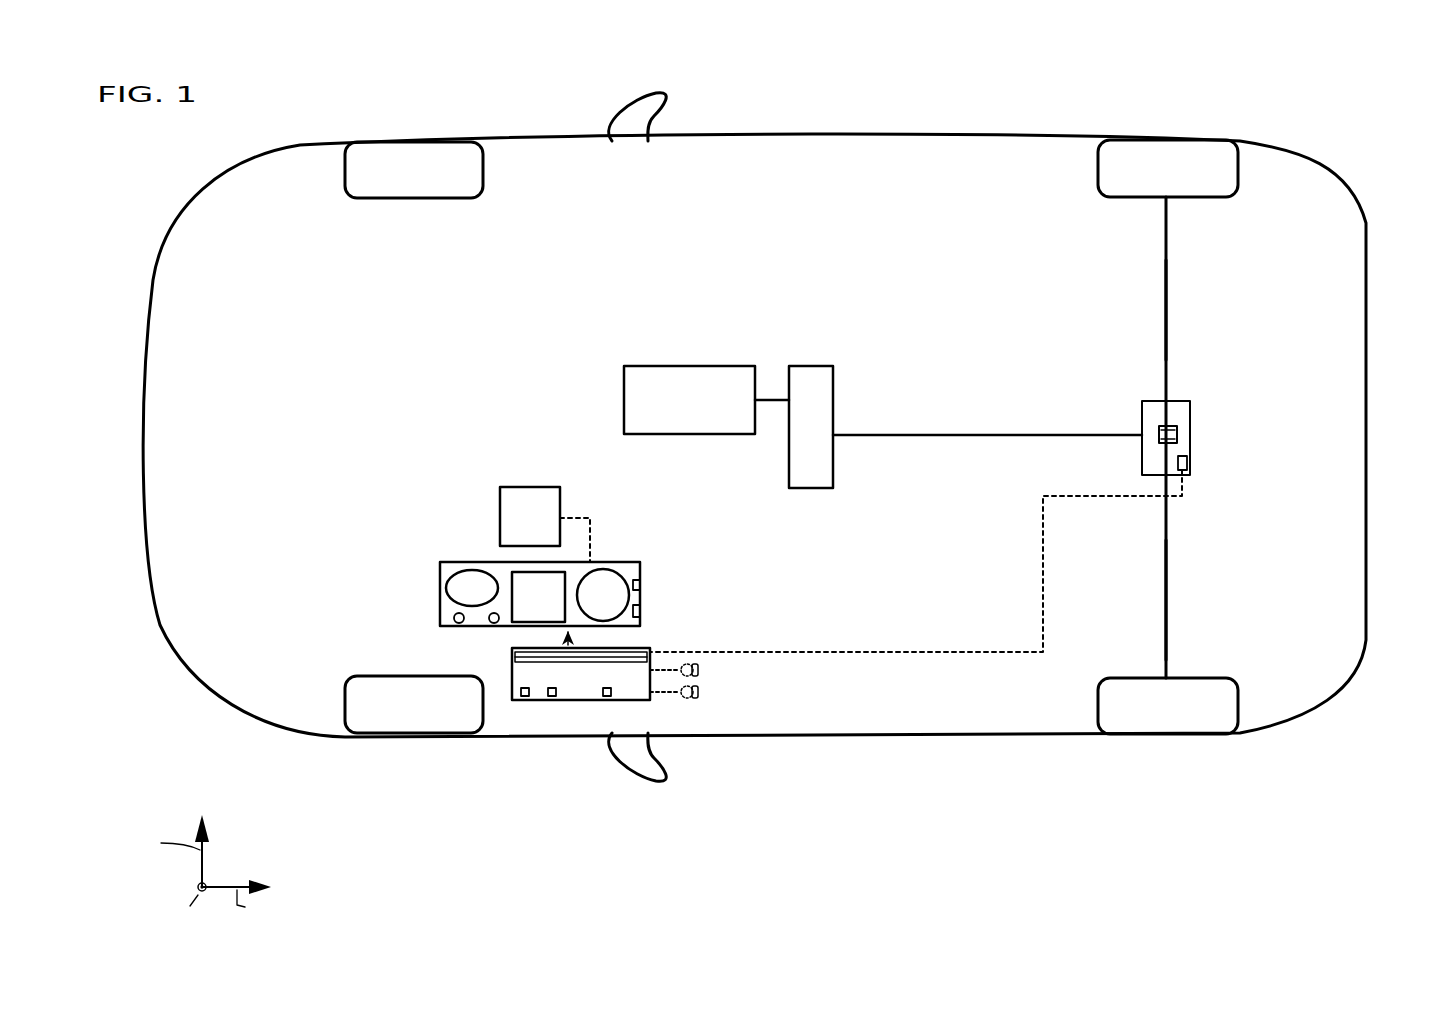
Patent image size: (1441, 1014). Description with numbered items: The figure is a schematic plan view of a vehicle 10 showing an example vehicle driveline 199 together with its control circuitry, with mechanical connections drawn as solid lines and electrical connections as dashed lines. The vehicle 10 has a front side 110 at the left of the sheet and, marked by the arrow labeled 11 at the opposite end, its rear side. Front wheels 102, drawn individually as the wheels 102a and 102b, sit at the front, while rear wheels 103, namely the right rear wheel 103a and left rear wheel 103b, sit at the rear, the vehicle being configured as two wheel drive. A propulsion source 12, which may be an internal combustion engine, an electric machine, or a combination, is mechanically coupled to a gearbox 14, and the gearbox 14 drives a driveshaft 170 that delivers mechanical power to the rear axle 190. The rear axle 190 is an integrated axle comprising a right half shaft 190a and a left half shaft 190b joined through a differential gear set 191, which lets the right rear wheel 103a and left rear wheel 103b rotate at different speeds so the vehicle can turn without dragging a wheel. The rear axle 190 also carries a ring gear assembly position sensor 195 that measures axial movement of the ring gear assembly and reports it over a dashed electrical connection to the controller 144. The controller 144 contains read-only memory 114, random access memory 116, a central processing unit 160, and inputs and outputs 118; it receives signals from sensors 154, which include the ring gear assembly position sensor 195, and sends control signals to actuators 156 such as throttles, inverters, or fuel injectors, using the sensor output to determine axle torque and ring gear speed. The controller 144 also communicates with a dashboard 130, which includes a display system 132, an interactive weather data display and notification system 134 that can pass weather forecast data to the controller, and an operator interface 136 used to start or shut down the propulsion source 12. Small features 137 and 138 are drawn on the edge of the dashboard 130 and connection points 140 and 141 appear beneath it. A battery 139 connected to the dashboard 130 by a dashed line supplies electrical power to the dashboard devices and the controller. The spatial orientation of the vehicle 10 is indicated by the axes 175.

The vehicle 10 is at (985, 137).
The vehicle system 11 is at (1414, 172).
The propulsion source 12 is at (701, 411).
The gearbox 14 is at (822, 437).
The front wheels 102 is at (336, 200).
The front left wheel 102a is at (447, 198).
The front right wheel 102b is at (375, 735).
The rear wheels 103 is at (1245, 215).
The right rear wheel 103a is at (1167, 140).
The left rear wheel 103b is at (1170, 735).
The front side 110 is at (112, 230).
The read-only memory 114 is at (525, 696).
The random access memory 116 is at (552, 696).
The inputs and outputs 118 is at (633, 661).
The dashboard 130 is at (643, 562).
The display system 132 is at (486, 597).
The interactive weather data display and notification system 134 is at (552, 606).
The operator interface 136 is at (617, 604).
The controller port 137 is at (640, 584).
The controller port 138 is at (640, 611).
The battery 139 is at (545, 524).
The connector 140 is at (459, 623).
The connector 141 is at (494, 623).
The controller 144 is at (581, 666).
The sensors 154 is at (691, 670).
The actuators 156 is at (691, 692).
The central processing unit 160 is at (607, 696).
The driveshaft 170 is at (1020, 433).
The axes 175 is at (228, 832).
The rear axle 190 is at (1196, 488).
The right half shaft 190a is at (1167, 330).
The left half shaft 190b is at (1165, 588).
The differential gear set 191 is at (1177, 432).
The ring gear assembly position sensor 195 is at (1187, 465).
The vehicle driveline 199 is at (812, 275).